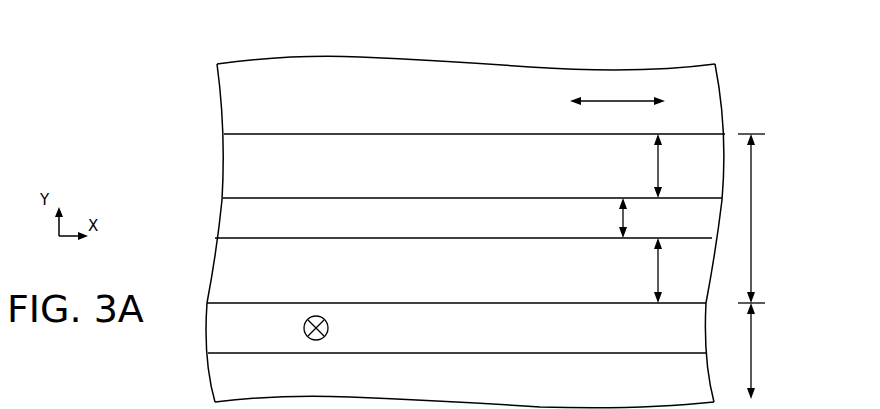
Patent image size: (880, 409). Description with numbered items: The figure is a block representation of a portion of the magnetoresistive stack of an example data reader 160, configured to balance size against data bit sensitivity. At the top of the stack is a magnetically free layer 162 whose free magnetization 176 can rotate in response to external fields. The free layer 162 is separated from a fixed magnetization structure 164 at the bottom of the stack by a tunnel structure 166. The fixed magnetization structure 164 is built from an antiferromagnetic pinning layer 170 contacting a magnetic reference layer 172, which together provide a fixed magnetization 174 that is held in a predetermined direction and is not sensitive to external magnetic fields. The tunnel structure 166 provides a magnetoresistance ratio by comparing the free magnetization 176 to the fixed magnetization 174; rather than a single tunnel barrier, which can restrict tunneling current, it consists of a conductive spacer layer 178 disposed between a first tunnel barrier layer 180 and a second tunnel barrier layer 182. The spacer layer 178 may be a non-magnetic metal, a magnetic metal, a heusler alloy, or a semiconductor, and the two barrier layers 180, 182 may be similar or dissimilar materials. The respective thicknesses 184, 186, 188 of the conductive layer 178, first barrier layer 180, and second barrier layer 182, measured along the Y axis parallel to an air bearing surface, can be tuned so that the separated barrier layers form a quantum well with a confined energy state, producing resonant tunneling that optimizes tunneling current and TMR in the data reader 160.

The data reader 160 is at (212, 55).
The magnetically free layer 162 is at (262, 107).
The second tunnel barrier layer 182 is at (262, 175).
The spacer layer 178 is at (262, 228).
The first tunnel barrier layer 180 is at (262, 281).
The magnetic reference layer 172 is at (262, 339).
The antiferromagnetic pinning layer 170 is at (262, 387).
The fixed magnetization 174 is at (324, 337).
The free magnetization 176 is at (607, 105).
The thickness of conductive layer 184 is at (676, 270).
The thickness of first barrier layer 186 is at (605, 218).
The thickness of second barrier layer 188 is at (676, 166).
The tunnel structure 166 is at (765, 218).
The fixed magnetization structure 164 is at (765, 351).